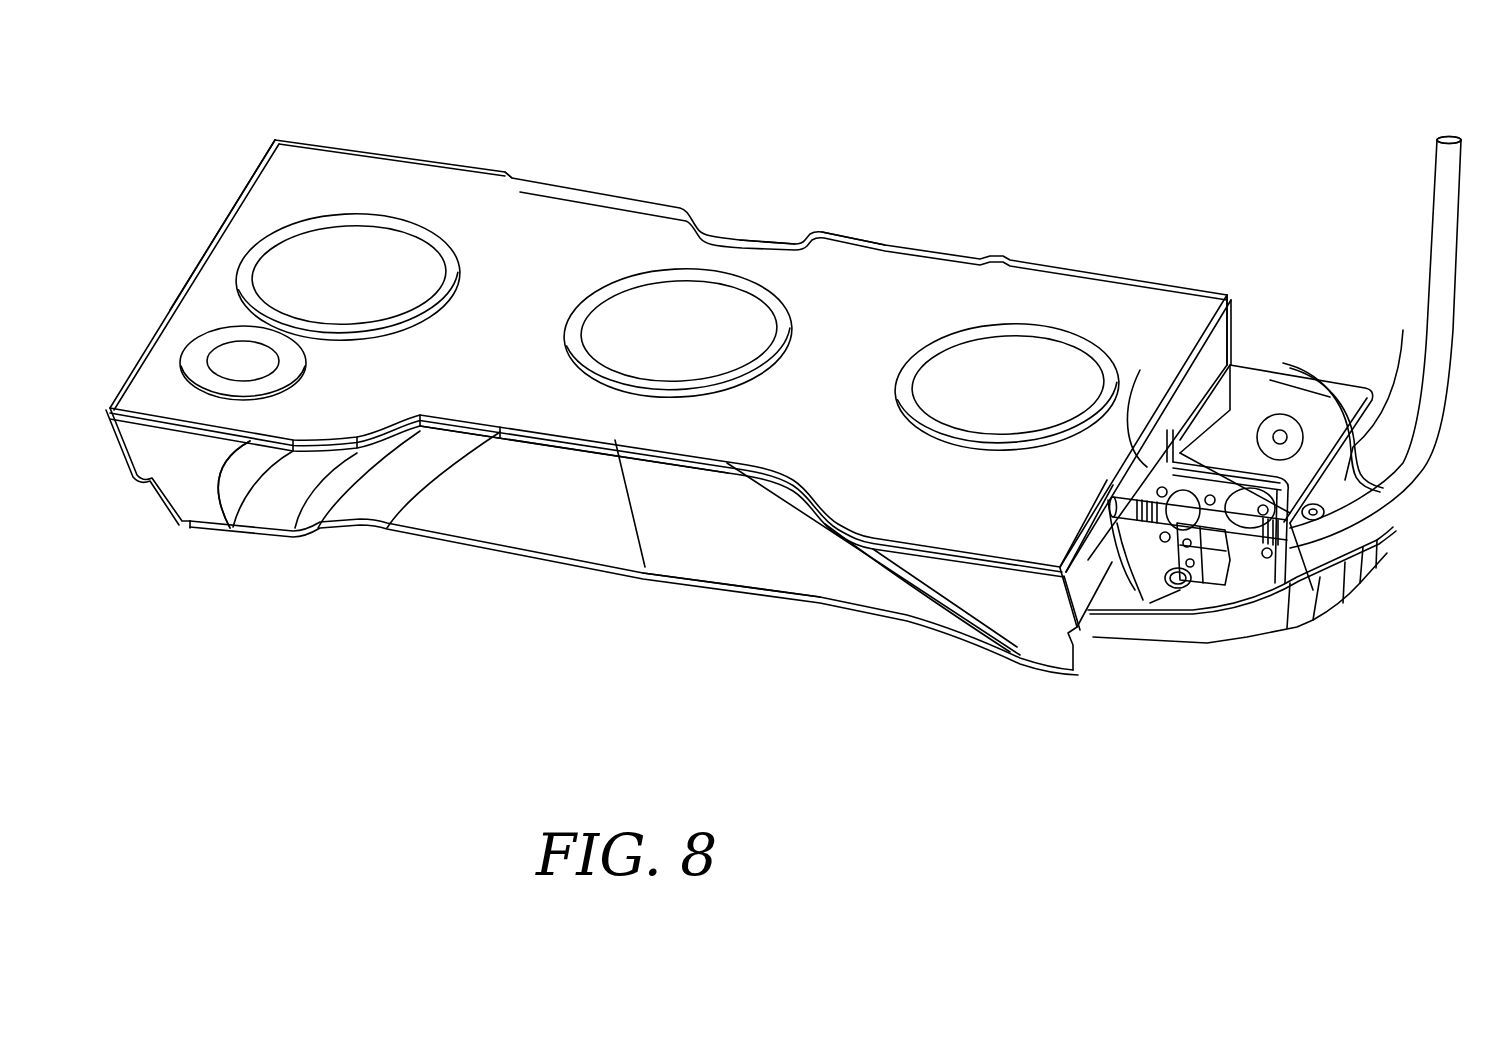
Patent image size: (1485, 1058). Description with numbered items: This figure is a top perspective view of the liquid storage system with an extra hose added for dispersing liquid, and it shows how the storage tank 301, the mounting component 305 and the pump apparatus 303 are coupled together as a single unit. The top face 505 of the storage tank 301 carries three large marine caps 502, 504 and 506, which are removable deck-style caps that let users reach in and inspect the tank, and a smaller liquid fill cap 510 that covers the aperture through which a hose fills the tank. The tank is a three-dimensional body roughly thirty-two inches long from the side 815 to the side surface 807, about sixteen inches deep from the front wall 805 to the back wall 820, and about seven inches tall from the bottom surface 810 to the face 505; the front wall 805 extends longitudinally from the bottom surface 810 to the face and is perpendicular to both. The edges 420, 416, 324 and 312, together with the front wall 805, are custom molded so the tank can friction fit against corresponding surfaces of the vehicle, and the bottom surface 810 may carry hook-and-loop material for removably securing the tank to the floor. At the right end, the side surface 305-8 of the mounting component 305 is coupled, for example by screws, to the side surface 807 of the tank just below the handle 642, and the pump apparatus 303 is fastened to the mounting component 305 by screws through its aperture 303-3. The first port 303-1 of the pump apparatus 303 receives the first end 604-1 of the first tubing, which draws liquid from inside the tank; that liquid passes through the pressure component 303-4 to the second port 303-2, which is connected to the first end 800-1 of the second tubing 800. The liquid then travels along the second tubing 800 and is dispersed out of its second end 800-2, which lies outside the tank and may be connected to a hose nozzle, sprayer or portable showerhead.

The storage tank 301 is at (1095, 290).
The pump apparatus 303 is at (1347, 372).
The first port 303-1 is at (1150, 603).
The second port 303-2 is at (1313, 590).
The aperture 303-3 is at (1403, 330).
The pressure component 303-4 is at (1283, 368).
The mounting component 305 is at (1160, 600).
The side surface 305-8 is at (1120, 570).
The edge 312 is at (615, 440).
The edge 324 is at (768, 254).
The edge 416 is at (927, 550).
The edge 420 is at (230, 528).
The marine cap 502 is at (372, 213).
The marine cap 504 is at (650, 268).
The face 505 is at (533, 217).
The marine cap 506 is at (968, 325).
The liquid fill cap 510 is at (205, 350).
The first end of the first tubing 604-1 is at (1137, 563).
The handle 642 is at (1140, 370).
The second tubing 800 is at (1420, 463).
The first end of the second tubing 800-1 is at (1330, 595).
The second end of the second tubing 800-2 is at (1450, 130).
The front wall 805 is at (525, 507).
The side surface 807 is at (1210, 357).
The bottom surface 810 is at (717, 592).
The side 815 is at (247, 185).
The back wall 820 is at (867, 240).